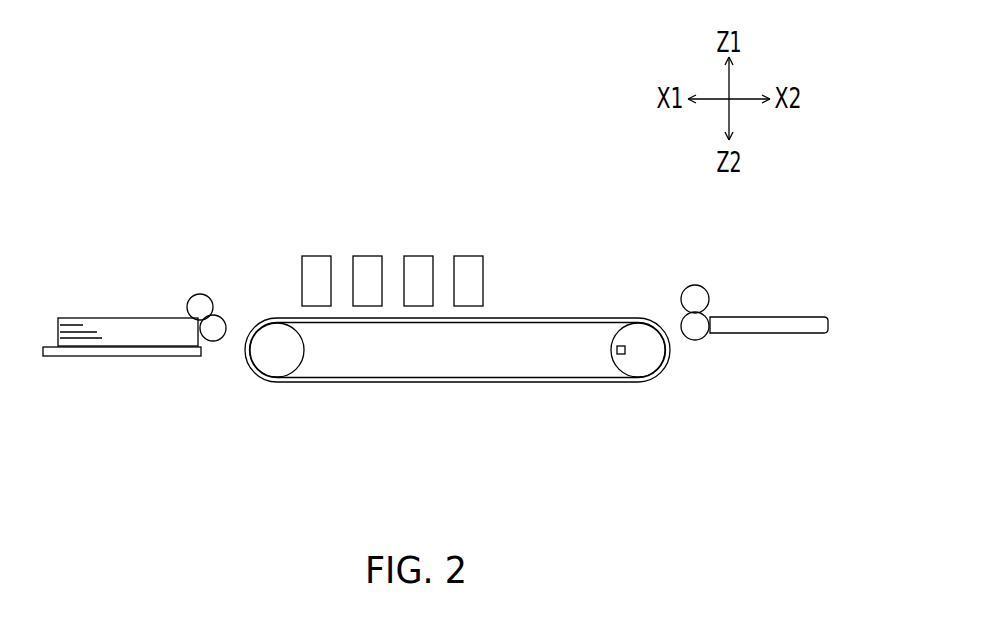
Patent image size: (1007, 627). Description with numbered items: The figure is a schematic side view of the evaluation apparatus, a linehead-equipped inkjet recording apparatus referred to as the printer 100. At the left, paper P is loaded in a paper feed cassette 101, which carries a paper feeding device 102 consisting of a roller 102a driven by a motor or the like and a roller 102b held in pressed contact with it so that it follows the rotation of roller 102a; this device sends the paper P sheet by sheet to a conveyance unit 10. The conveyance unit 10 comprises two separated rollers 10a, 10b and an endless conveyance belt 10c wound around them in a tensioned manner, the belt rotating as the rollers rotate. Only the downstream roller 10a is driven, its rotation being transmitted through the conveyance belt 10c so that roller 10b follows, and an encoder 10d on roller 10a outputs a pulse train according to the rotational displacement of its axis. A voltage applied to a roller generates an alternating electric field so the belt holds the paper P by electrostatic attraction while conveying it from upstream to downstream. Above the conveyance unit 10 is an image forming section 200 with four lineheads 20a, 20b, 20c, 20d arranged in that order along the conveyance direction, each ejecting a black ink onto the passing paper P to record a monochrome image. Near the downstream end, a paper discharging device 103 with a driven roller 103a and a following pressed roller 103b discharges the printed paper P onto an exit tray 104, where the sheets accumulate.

The printer 100 is at (561, 199).
The paper feed cassette 101 is at (97, 357).
The paper P is at (123, 324).
The paper feeding device 102 is at (293, 268).
The roller 102a is at (197, 292).
The roller 102b is at (218, 318).
The image forming section 200 is at (272, 150).
The linehead 20a is at (316, 262).
The linehead 20b is at (366, 262).
The linehead 20c is at (418, 262).
The linehead 20d is at (470, 262).
The conveyance unit 10 is at (685, 468).
The roller 10a is at (643, 368).
The roller 10b is at (273, 372).
The conveyance belt 10c is at (402, 385).
The encoder 10d is at (617, 362).
The paper discharging device 103 is at (591, 243).
The roller 103a is at (684, 325).
The roller 103b is at (684, 292).
The exit tray 104 is at (746, 334).